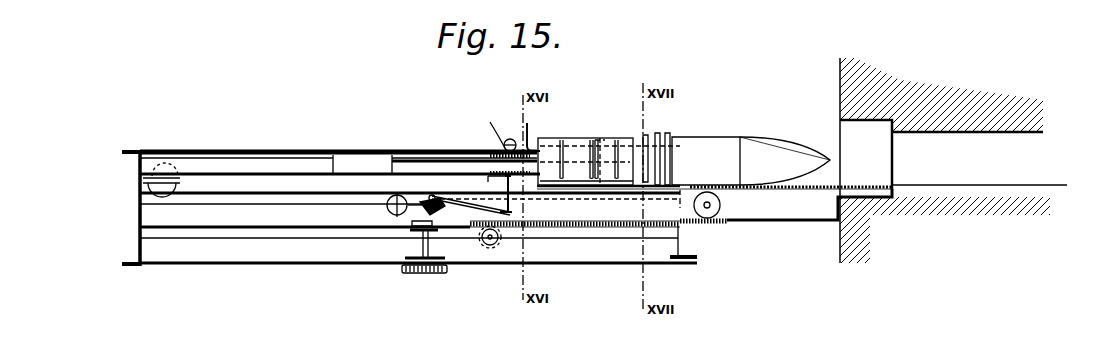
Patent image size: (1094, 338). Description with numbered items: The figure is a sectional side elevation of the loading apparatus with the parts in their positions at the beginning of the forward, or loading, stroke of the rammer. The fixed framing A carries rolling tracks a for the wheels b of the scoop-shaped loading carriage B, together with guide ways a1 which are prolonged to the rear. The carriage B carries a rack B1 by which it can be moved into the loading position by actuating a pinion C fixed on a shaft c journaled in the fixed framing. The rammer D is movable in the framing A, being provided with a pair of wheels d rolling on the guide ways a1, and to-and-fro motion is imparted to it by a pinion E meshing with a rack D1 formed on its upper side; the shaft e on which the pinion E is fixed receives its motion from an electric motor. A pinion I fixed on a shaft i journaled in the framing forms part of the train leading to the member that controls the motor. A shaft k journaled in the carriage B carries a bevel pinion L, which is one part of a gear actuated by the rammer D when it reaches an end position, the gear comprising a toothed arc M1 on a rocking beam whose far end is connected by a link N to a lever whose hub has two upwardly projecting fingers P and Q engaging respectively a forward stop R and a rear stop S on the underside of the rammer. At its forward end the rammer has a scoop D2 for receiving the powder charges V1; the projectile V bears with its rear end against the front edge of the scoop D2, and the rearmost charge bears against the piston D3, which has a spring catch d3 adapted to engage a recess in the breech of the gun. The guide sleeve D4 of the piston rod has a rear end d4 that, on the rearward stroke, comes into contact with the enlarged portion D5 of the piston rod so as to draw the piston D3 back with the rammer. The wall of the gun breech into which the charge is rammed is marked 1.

The fixed framing A is at (188, 264).
The rolling tracks a is at (265, 229).
The guide ways a1 is at (218, 195).
The rammer D is at (216, 164).
The rack D1 is at (184, 158).
The enlarged portion of the piston rod D5 is at (347, 166).
The rear end of the guide sleeve d4 is at (405, 152).
The wheels of the rammer d is at (141, 189).
The rear stop S is at (156, 180).
The piston D3 is at (546, 166).
The spring catch d3 is at (538, 128).
The powder charges V1 is at (622, 162).
The projectile V is at (714, 146).
The scoop D2 is at (625, 203).
The guide sleeve D4 is at (560, 188).
The pinion E is at (509, 139).
The shaft e is at (494, 126).
The forward stop R is at (500, 175).
The finger Q is at (514, 190).
The finger P is at (496, 192).
The link N is at (469, 209).
The shaft k is at (434, 211).
The toothed arc M1 is at (394, 221).
The wheels b is at (385, 206).
The bevel pinion L is at (412, 228).
The pinion I is at (438, 270).
The shaft i is at (410, 273).
The shaft c is at (499, 237).
The pinion C is at (487, 252).
The loading carriage B is at (785, 213).
The rack B1 is at (712, 228).
The wall socket 1 is at (886, 124).